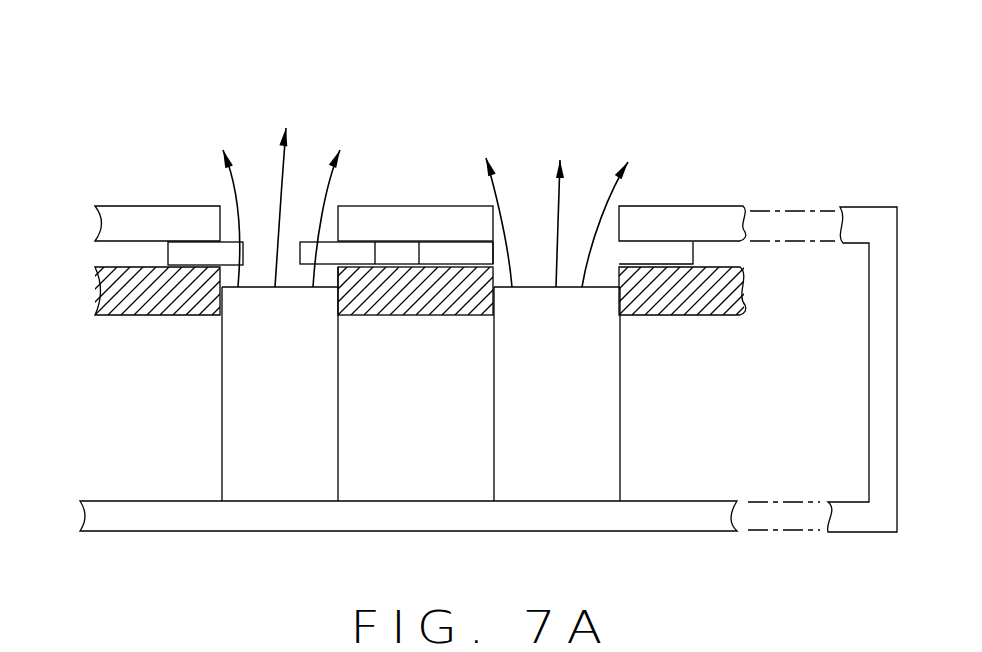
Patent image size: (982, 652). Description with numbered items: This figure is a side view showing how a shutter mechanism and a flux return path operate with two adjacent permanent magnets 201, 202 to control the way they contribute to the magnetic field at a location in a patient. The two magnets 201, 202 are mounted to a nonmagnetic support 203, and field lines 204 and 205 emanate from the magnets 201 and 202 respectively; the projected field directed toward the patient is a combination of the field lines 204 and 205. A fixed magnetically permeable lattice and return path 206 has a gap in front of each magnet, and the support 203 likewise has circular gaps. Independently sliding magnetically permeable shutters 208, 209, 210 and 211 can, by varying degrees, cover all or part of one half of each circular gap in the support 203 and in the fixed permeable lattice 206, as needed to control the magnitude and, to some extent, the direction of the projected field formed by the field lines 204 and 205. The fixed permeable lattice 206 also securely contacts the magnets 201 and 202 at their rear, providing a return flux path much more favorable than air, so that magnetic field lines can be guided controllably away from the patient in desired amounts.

The magnet 201 is at (260, 501).
The magnet 202 is at (532, 501).
The nonmagnetic support 203 is at (135, 315).
The field lines 204 is at (320, 177).
The field lines 205 is at (607, 195).
The fixed magnetically permeable lattice and return path 206 is at (160, 206).
The sliding magnetically permeable shutter 208 is at (168, 251).
The sliding magnetically permeable shutter 209 is at (320, 242).
The sliding magnetically permeable shutter 210 is at (493, 253).
The sliding magnetically permeable shutter 211 is at (693, 250).